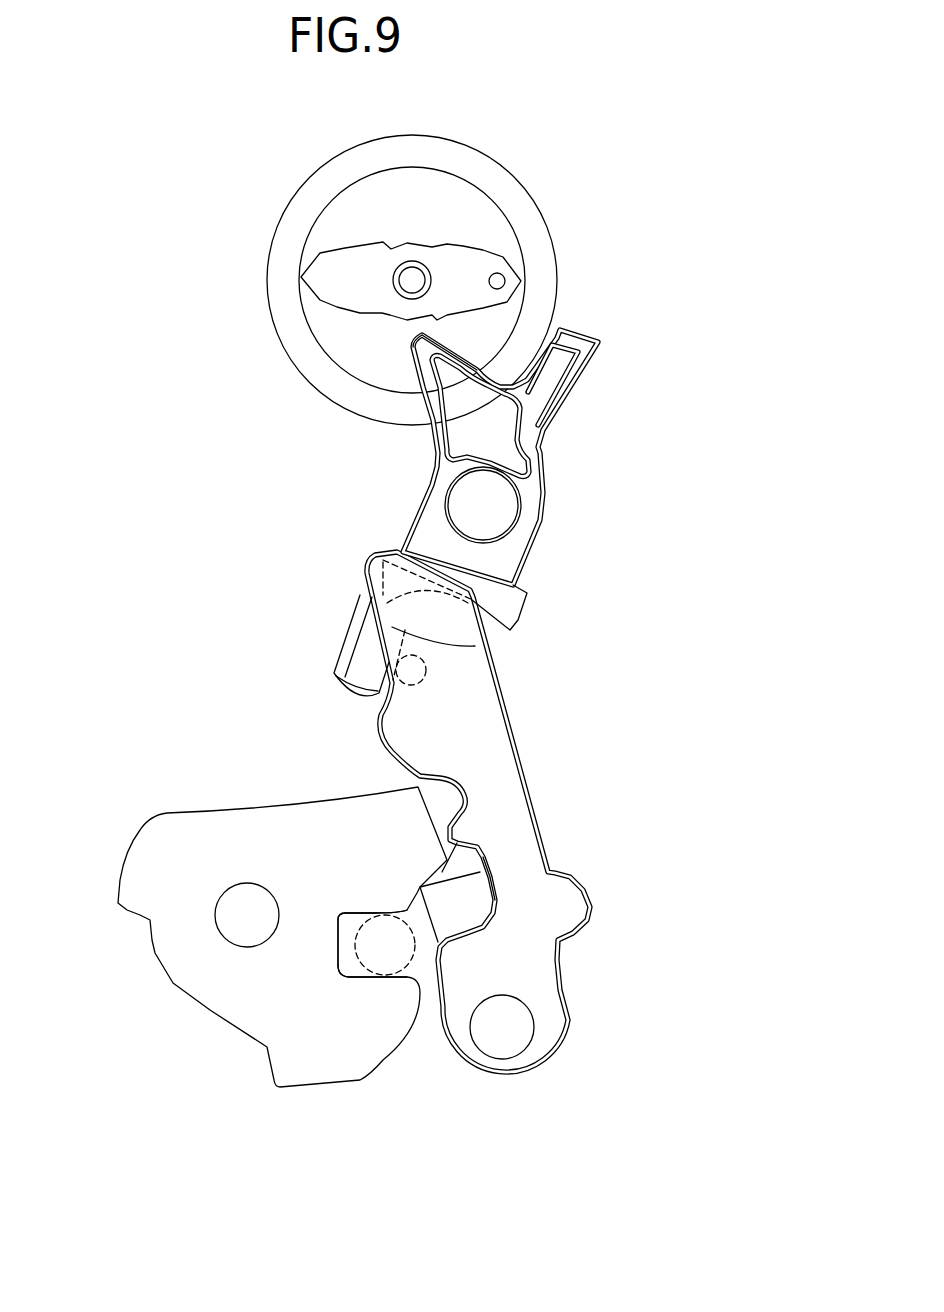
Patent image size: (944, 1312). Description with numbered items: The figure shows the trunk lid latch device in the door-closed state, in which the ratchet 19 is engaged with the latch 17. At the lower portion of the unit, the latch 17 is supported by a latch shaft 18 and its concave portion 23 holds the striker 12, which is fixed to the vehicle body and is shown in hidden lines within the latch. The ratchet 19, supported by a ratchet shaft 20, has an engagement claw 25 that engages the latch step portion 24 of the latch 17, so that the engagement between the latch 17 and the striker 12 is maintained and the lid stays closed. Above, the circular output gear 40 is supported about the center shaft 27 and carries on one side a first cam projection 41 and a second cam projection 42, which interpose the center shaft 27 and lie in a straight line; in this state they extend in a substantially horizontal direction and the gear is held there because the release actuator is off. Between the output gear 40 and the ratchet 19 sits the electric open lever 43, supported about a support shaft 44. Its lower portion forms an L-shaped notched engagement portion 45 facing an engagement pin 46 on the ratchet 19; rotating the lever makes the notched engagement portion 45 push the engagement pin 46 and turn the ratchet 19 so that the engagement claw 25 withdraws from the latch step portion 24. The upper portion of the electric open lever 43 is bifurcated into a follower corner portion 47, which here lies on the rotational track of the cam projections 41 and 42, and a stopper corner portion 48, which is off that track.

The striker 12 is at (382, 952).
The latch 17 is at (235, 990).
The latch shaft 18 is at (237, 908).
The ratchet 19 is at (522, 763).
The ratchet shaft 20 is at (508, 1025).
The concave portion 23 is at (350, 977).
The latch step portion 24 is at (440, 872).
The engagement claw 25 is at (453, 892).
The center shaft 27 is at (413, 277).
The output gear 40 is at (285, 235).
The first cam projection 41 is at (505, 266).
The second cam projection 42 is at (322, 280).
The electric open lever 43 is at (432, 486).
The support shaft 44 is at (497, 505).
The notched engagement portion 45 is at (475, 646).
The engagement pin 46 is at (399, 662).
The follower corner portion 47 is at (410, 343).
The stopper corner portion 48 is at (587, 332).